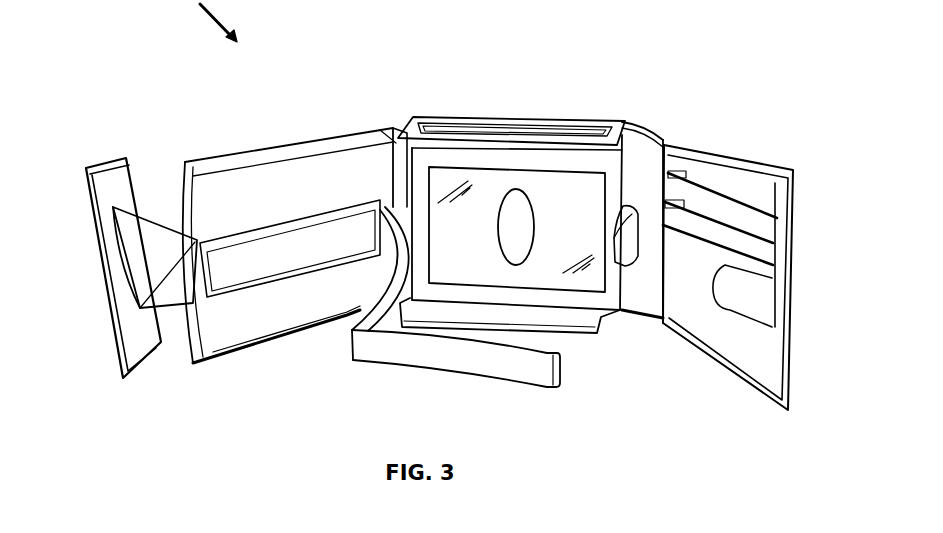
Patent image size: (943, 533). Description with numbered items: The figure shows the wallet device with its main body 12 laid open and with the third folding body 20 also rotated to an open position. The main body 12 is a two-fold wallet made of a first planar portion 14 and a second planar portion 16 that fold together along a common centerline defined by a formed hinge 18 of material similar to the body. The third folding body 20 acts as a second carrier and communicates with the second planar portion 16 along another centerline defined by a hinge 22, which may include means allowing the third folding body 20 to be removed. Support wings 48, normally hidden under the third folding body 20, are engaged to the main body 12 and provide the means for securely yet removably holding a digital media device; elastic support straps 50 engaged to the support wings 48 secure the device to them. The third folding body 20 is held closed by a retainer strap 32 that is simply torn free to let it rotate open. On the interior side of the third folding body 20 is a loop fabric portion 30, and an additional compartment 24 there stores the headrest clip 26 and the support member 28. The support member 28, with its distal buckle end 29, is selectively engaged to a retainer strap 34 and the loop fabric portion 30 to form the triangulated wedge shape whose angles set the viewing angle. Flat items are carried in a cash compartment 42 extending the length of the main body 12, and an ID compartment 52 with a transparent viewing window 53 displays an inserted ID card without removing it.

The main body 12 is at (710, 137).
The first planar portion 14 is at (786, 165).
The second planar portion 16 is at (593, 118).
The hinge 18 is at (645, 165).
The third folding body 20 is at (245, 155).
The hinge 22 is at (383, 136).
The additional compartment 24 is at (190, 337).
The clip 26 is at (106, 157).
The support member 28 is at (377, 357).
The distal buckle end 29 is at (550, 388).
The loop fabric portion 30 is at (338, 237).
The retainer strap 32 is at (629, 252).
The retainer strap 34 is at (740, 302).
The cash compartment 42 is at (723, 153).
The support wings 48 is at (447, 142).
The elastic support straps 50 is at (510, 132).
The ID compartment 52 is at (548, 248).
The transparent viewing window 53 is at (480, 263).